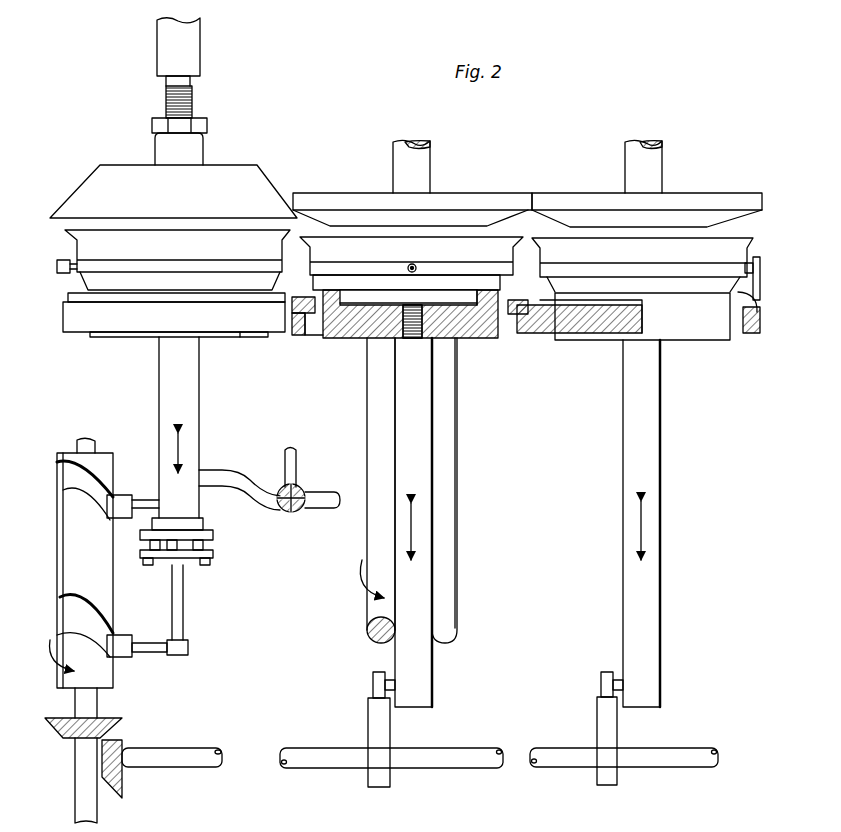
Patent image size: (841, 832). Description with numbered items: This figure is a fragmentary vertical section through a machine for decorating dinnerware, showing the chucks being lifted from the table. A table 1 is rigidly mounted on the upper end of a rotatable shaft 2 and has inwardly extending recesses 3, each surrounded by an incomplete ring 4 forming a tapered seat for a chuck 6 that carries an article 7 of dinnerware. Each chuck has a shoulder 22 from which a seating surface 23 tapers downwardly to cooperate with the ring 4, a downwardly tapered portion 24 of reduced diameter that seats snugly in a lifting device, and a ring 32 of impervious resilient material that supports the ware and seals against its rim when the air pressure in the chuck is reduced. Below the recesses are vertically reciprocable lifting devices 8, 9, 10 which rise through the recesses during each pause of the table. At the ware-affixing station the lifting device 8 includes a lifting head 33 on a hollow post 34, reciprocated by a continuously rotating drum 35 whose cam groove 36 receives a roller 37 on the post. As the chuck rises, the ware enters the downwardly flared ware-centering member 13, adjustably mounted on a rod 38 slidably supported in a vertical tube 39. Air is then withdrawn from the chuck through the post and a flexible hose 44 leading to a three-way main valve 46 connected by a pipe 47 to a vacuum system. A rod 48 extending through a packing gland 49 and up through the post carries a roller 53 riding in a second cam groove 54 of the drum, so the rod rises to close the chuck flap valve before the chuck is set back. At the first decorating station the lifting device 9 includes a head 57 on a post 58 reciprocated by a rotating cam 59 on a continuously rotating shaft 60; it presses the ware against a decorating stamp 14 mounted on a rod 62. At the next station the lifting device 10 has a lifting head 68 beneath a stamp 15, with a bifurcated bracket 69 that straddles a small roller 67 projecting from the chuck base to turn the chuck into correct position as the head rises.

The table 1 is at (82, 316).
The rotatable shaft 2 is at (445, 427).
The recess 3 is at (508, 318).
The incomplete ring 4 is at (74, 290).
The chuck 6 is at (74, 280).
The article of dinnerware 7 is at (90, 235).
The lifting device 8 is at (134, 341).
The lifting device 9 is at (365, 342).
The lifting device 10 is at (618, 346).
The ware-centering member 13 is at (210, 185).
The decorating stamp 14 is at (425, 213).
The decorating stamp 15 is at (745, 203).
The shoulder 22 is at (479, 308).
The seating surface 23 is at (295, 300).
The downwardly tapered portion 24 is at (440, 318).
The ring of impervious resilient material 32 is at (80, 255).
The lifting head 33 is at (245, 340).
The hollow post 34 is at (172, 410).
The drum 35 is at (82, 545).
The cam groove 36 is at (75, 478).
The roller 37 is at (125, 502).
The rod 38 is at (192, 96).
The vertical tube 39 is at (185, 42).
The flexible hose 44 is at (225, 475).
The three-way main valve 46 is at (299, 508).
The pipe 47 is at (318, 493).
The rod 48 is at (178, 604).
The packing gland 49 is at (210, 533).
The roller 53 is at (125, 660).
The cam groove 54 is at (78, 605).
The head 57 is at (336, 322).
The post 58 is at (413, 468).
The rotating cam 59 is at (368, 724).
The continuously rotating shaft 60 is at (445, 775).
The rod 62 is at (415, 165).
The roller 67 is at (56, 266).
The lifting head 68 is at (690, 322).
The bifurcated bracket 69 is at (760, 302).